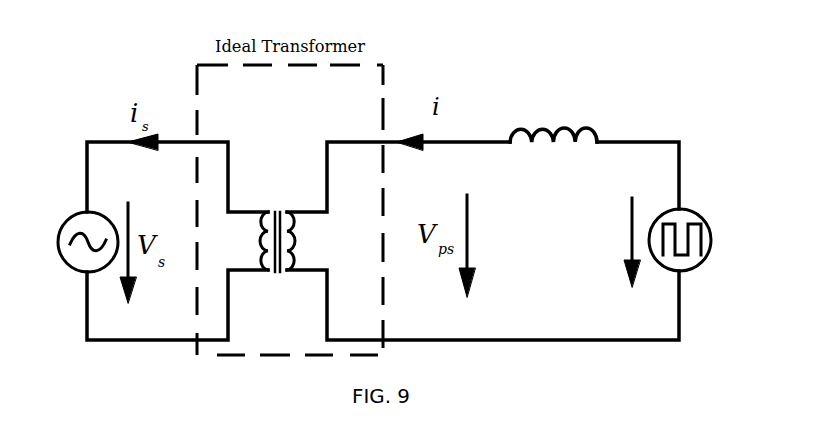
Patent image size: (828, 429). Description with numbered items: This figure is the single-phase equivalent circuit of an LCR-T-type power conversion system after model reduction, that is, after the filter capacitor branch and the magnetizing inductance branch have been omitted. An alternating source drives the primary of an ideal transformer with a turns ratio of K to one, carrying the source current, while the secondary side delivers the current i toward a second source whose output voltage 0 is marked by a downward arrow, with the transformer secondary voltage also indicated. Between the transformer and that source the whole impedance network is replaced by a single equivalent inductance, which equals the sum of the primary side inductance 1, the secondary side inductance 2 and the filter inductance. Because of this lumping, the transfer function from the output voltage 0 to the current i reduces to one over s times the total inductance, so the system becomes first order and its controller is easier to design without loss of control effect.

The output voltage V0 0 is at (655, 242).
The primary side inductance L1 1 is at (556, 118).
The secondary side inductance L2 2 is at (418, 184).